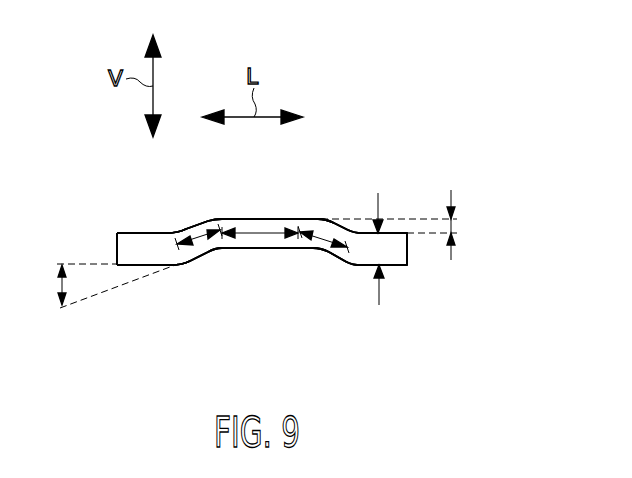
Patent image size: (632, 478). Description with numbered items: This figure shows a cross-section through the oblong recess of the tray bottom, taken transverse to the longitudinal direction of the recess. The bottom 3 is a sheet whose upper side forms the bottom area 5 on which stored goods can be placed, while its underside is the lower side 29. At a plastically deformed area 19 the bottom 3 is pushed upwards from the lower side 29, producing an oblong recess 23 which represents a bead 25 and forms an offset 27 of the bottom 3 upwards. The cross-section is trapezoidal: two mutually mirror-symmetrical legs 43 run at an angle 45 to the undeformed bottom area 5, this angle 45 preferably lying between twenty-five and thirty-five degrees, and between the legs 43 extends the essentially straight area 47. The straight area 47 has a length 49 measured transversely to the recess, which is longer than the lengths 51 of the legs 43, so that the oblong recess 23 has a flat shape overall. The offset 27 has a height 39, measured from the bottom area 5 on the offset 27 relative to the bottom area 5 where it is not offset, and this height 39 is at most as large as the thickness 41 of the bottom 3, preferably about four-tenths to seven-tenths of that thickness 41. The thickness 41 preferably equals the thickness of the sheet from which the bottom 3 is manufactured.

The bottom 3 is at (407, 258).
The bottom area 5 is at (130, 233).
The plastically deformed area 19 is at (360, 166).
The oblong recess 23 is at (274, 187).
The bead 25 is at (274, 187).
The offset 27 is at (281, 270).
The lower side 29 is at (140, 265).
The height 39 is at (452, 227).
The thickness 41 is at (378, 205).
The leg 43 is at (218, 213).
The angle 45 is at (61, 291).
The straight area 47 is at (303, 213).
The length 49 is at (257, 236).
The length 51 is at (203, 252).